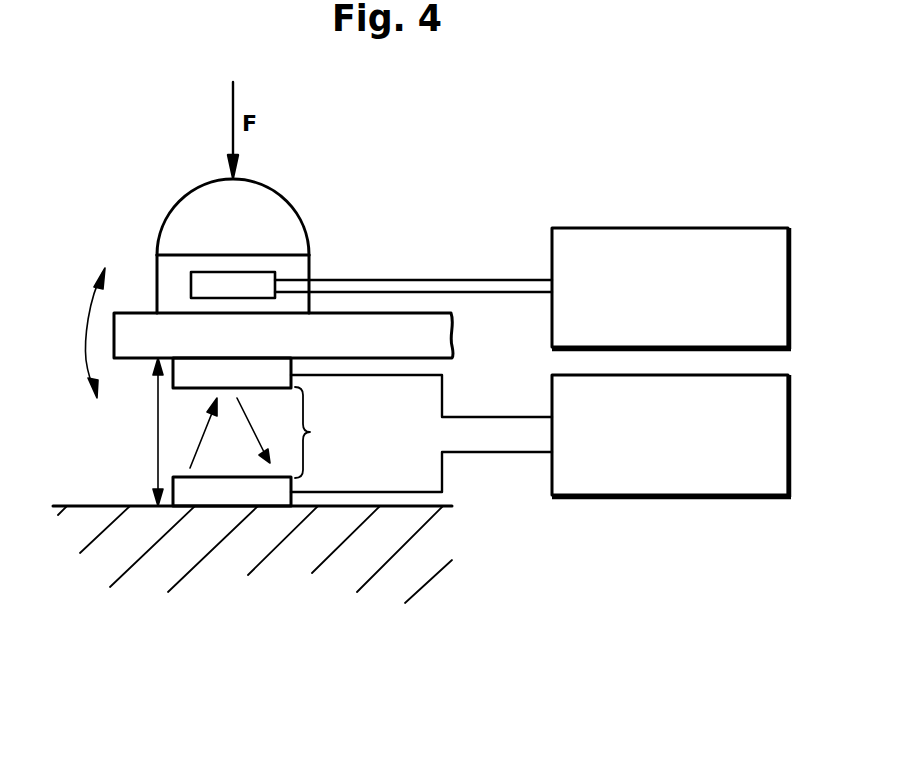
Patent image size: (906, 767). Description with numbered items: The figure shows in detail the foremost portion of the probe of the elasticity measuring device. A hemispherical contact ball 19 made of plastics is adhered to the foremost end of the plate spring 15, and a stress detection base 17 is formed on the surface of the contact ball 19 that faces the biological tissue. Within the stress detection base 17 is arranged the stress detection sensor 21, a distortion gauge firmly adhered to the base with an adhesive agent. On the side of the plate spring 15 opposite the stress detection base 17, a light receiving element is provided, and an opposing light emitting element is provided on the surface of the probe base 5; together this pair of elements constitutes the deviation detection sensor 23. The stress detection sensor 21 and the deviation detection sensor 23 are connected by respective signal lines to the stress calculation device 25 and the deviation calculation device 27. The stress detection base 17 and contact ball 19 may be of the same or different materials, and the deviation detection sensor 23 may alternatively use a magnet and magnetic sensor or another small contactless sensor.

The probe base 5 is at (275, 528).
The plate spring 15 is at (113, 340).
The stress detection base 17 is at (156, 277).
The hemispherical contact ball 19 is at (184, 196).
The stress detection sensor 21 is at (259, 272).
The deviation detection sensor 23 is at (311, 432).
The stress calculation device 25 is at (650, 228).
The deviation calculation device 27 is at (723, 497).